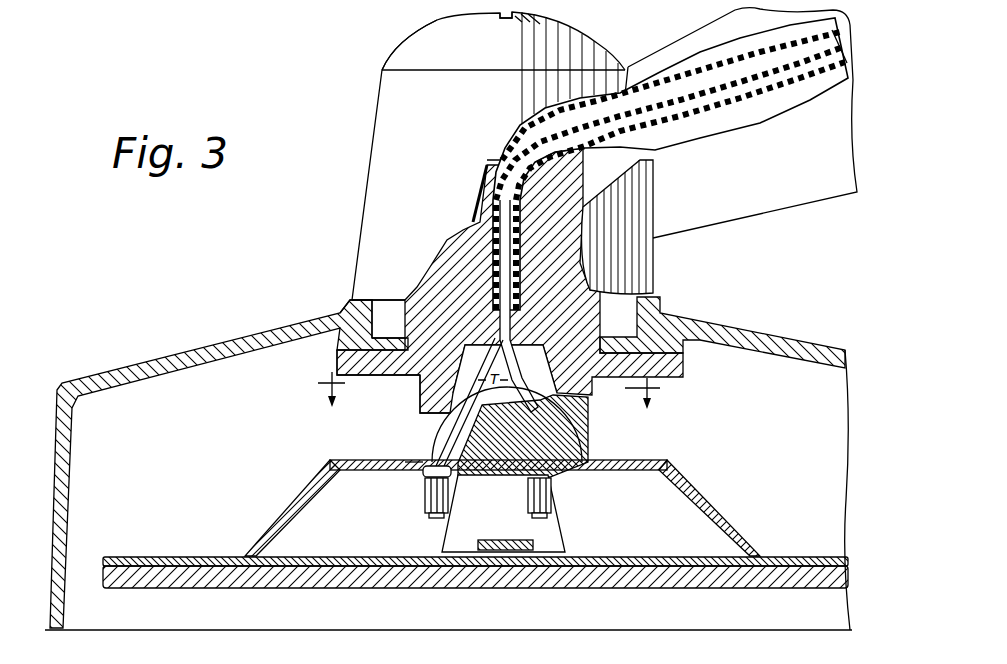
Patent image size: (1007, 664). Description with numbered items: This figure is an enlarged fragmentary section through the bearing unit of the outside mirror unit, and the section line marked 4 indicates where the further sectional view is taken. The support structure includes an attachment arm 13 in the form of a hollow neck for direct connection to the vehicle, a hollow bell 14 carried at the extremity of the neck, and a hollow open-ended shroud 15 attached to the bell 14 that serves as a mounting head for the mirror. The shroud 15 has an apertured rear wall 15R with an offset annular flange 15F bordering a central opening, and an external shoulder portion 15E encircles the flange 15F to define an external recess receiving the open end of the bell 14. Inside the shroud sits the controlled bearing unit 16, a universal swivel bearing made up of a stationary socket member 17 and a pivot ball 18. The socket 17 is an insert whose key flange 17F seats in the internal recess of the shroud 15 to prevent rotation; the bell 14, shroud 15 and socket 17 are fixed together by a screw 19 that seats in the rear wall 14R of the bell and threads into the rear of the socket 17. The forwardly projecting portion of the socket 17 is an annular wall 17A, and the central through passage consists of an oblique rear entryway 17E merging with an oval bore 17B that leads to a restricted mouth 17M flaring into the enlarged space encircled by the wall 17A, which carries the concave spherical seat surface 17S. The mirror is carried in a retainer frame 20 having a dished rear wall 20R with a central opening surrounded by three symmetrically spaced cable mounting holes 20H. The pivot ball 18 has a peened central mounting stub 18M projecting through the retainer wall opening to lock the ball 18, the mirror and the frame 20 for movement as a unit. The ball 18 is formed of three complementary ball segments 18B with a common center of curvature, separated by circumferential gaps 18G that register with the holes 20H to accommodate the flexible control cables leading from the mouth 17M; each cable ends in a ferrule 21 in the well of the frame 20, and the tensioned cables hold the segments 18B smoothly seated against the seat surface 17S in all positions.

The attachment arm 13 is at (795, 174).
The hollow bell 14 is at (412, 144).
The rear wall of the bell 14R is at (432, 48).
The shroud 15 is at (172, 441).
The external shoulder portion 15E is at (347, 313).
The offset annular flange 15F is at (384, 338).
The apertured rear wall 15R is at (764, 330).
The controlled bearing unit 16 is at (614, 413).
The stationary socket member 17 is at (570, 310).
The annular wall 17A is at (427, 400).
The oval bore 17B is at (490, 215).
The oblique rear entryway 17E is at (510, 176).
The key flange 17F is at (404, 362).
The restricted mouth 17M is at (497, 333).
The spherical seat surface 17S is at (428, 430).
The pivot ball 18 is at (522, 452).
The ball segments 18B is at (430, 415).
The circumferential gaps 18G is at (425, 458).
The central mounting stub 18M is at (488, 478).
The screw 19 is at (520, 14).
The retainer frame 20 is at (140, 557).
The cable mounting holes 20H is at (428, 455).
The dished rear wall 20R is at (672, 465).
The ferrule 21 is at (430, 495).
The section line 4- 4 is at (486, 396).